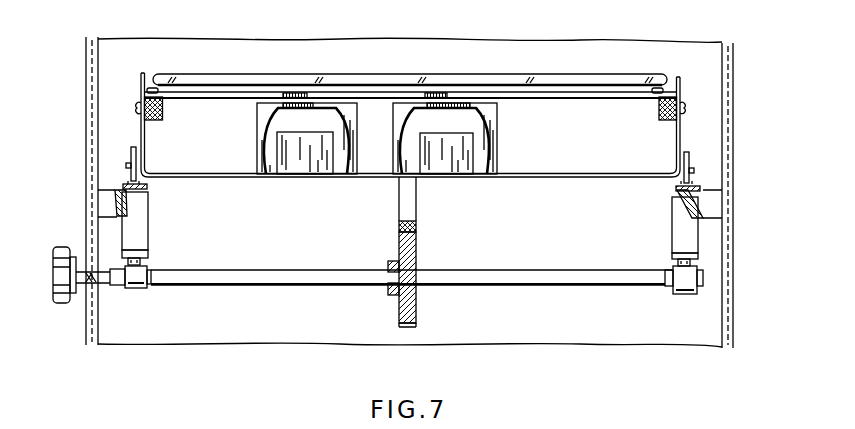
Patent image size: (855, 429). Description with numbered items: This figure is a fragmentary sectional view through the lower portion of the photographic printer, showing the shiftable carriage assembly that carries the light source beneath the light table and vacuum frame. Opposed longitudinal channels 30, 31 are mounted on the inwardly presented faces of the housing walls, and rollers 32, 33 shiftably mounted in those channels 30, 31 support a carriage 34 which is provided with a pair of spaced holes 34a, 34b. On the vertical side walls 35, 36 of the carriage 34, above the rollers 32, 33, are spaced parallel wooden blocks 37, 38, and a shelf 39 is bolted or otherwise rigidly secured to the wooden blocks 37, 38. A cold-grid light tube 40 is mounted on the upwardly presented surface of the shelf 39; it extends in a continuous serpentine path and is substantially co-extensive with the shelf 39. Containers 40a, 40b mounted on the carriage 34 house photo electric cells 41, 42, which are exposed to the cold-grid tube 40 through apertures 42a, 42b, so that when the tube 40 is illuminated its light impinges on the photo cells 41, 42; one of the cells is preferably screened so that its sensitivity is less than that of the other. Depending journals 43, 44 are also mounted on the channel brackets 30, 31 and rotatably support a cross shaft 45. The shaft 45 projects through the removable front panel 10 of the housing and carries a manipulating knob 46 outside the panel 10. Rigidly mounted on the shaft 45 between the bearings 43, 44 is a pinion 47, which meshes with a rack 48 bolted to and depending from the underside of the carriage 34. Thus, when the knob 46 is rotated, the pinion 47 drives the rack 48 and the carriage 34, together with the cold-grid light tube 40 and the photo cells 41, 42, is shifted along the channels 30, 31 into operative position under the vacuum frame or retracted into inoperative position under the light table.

The removable panel 10 is at (92, 322).
The longitudinal channel 30 is at (700, 188).
The longitudinal channel 31 is at (125, 184).
The roller 32 is at (690, 156).
The roller 33 is at (131, 148).
The carriage 34 is at (250, 177).
The hole 34a is at (430, 93).
The hole 34b is at (296, 93).
The vertical side wall 35 is at (682, 90).
The vertical side wall 36 is at (140, 85).
The wooden block 37 is at (659, 112).
The wooden block 38 is at (162, 118).
The shelf 39 is at (519, 99).
The cold-grid light tube 40 is at (241, 72).
The container 40a is at (500, 158).
The container 40b is at (257, 158).
The photo electric cell 41 is at (470, 170).
The photo electric cell 42 is at (320, 172).
The aperture 42a is at (452, 107).
The aperture 42b is at (312, 105).
The depending journal 43 is at (698, 258).
The depending journal 44 is at (148, 256).
The cross shaft 45 is at (284, 270).
The manipulating knob 46 is at (64, 247).
The pinion 47 is at (417, 258).
The rack 48 is at (417, 216).